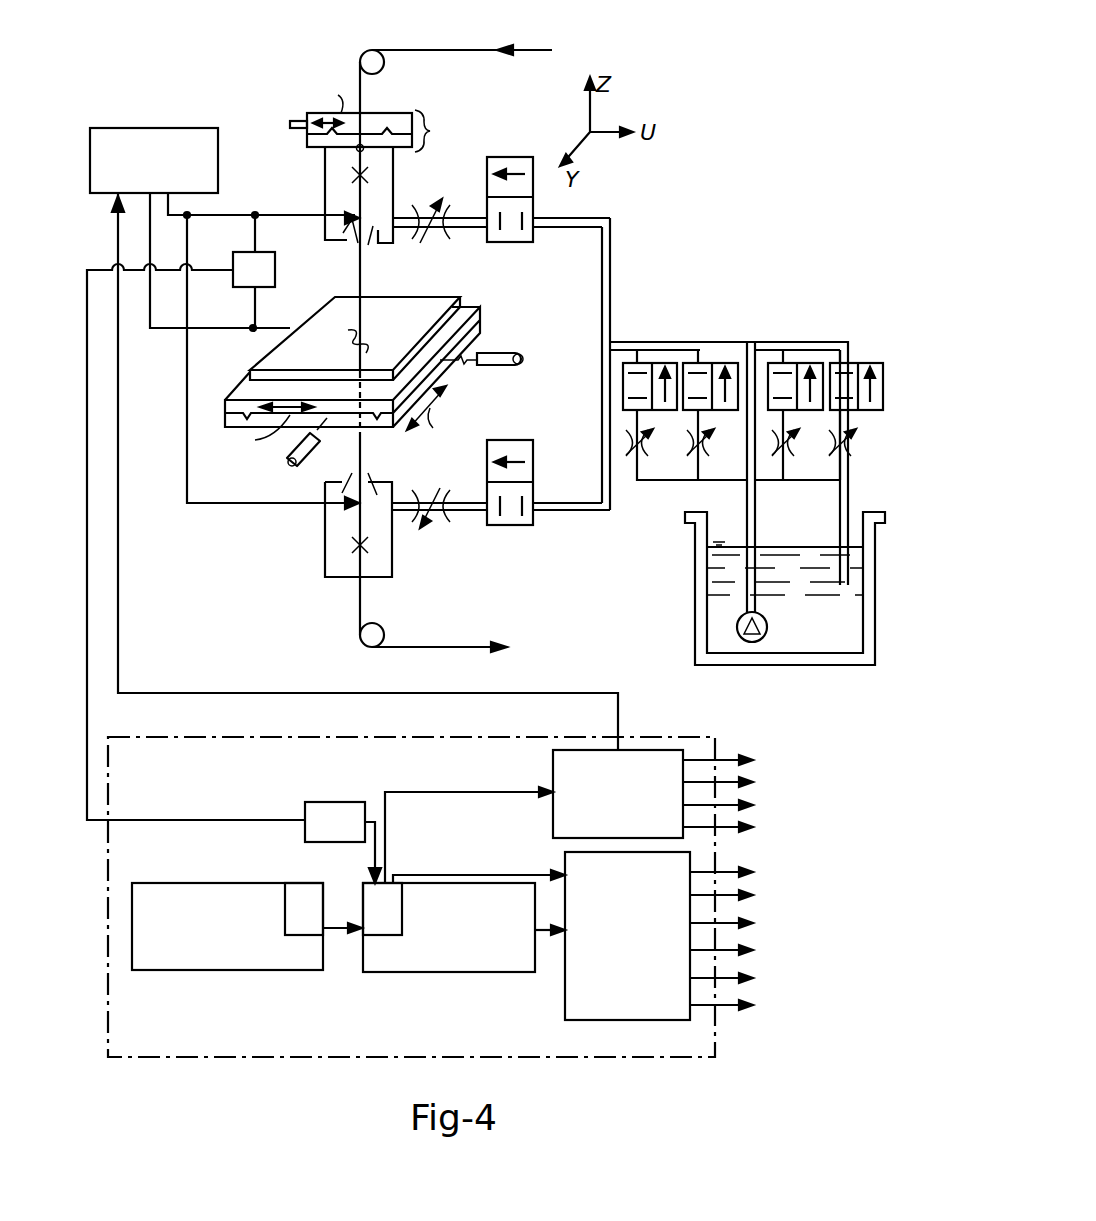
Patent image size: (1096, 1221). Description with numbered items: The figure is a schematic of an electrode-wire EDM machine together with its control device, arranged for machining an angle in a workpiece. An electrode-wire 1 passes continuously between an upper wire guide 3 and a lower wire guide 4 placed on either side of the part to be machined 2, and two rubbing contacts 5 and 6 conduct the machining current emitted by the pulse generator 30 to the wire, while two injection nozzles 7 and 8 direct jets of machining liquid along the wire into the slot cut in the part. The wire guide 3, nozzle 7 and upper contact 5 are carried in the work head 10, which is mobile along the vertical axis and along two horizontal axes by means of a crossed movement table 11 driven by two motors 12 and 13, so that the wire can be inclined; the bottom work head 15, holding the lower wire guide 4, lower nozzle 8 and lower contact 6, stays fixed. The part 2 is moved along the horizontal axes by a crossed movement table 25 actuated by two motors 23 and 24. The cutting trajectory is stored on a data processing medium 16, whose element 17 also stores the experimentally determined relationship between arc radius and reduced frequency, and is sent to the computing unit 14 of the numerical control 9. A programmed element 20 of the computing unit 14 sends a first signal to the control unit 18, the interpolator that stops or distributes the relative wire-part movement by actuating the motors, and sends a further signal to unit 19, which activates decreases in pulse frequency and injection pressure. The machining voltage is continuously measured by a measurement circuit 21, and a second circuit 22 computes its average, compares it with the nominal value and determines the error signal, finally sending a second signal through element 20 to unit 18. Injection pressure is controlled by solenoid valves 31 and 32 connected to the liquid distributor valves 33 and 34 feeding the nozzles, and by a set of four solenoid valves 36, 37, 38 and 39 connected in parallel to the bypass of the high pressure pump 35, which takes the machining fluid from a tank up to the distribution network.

The electrode-wire 1 is at (430, 50).
The part to be machined 2 is at (405, 305).
The upper wire guide 3 is at (352, 178).
The lower wire guide 4 is at (366, 548).
The upper rubbing contact 5 is at (340, 235).
The lower rubbing contact 6 is at (348, 510).
The upper injection nozzle 7 is at (377, 240).
The lower injection nozzle 8 is at (370, 478).
The numerical control 9 is at (140, 1038).
The work head 10 is at (395, 172).
The crossed movement table 11 is at (383, 116).
The motor 12 is at (293, 124).
The motor 13 is at (355, 150).
The computing unit 14 is at (470, 972).
The bottom work head 15 is at (343, 562).
The data processing medium 16 is at (235, 970).
The element of data processing medium 17 is at (316, 918).
The control unit 18 is at (597, 1020).
The unit of numerical control 19 is at (553, 762).
The element of computing unit 20 is at (394, 918).
The measurement circuit 21 is at (235, 258).
The second circuit 22 is at (337, 802).
The motor 23 is at (290, 456).
The motor 24 is at (490, 367).
The crossed movement table 25 is at (482, 290).
The pulse generator 30 is at (145, 128).
The solenoid valve 31 is at (432, 232).
The solenoid valve 32 is at (440, 515).
The liquid distributor valve 33 is at (523, 520).
The liquid distributor valve 34 is at (523, 240).
The pump 35 is at (752, 642).
The solenoid valve 36 is at (640, 446).
The solenoid valve 37 is at (701, 446).
The solenoid valve 38 is at (786, 446).
The solenoid valve 39 is at (845, 450).